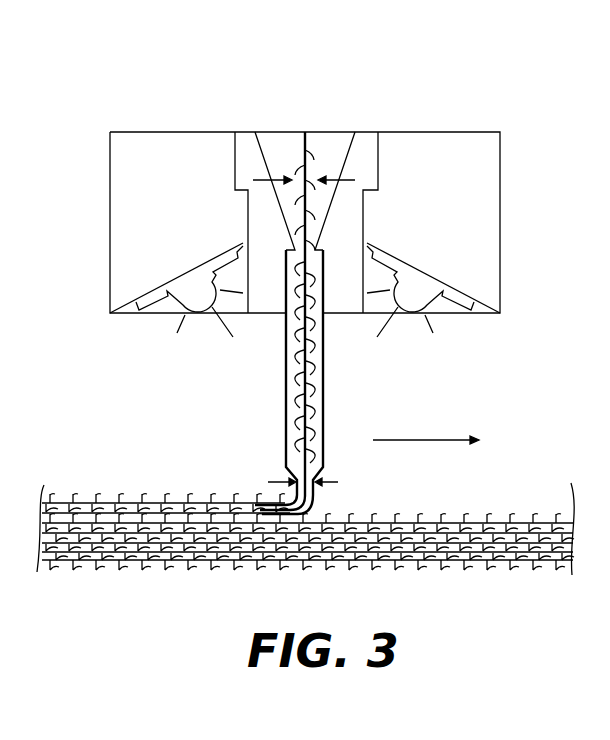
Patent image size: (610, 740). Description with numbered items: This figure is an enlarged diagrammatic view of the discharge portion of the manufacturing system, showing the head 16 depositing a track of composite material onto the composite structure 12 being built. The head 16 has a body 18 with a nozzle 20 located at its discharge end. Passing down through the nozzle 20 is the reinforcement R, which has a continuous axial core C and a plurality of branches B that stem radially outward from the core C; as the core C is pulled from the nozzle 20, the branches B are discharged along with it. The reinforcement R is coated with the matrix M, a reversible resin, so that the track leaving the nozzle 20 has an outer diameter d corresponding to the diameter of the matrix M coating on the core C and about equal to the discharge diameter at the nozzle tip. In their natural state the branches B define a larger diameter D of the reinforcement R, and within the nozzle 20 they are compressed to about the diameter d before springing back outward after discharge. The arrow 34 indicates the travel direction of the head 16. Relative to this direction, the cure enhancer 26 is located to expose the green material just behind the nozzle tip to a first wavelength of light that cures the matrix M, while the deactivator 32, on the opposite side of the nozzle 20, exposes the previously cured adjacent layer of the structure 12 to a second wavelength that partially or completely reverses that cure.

The head 16 is at (519, 78).
The body 18 is at (466, 246).
The nozzle 20 is at (286, 395).
The cure enhancer 26 is at (190, 304).
The deactivator 32 is at (422, 304).
The arrow 34 is at (425, 440).
The composite structure 12 is at (492, 566).
The reinforcement R is at (315, 119).
The matrix M is at (316, 400).
The branches B is at (301, 143).
The axial core C is at (308, 143).
The diameter of the reinforcement D is at (312, 181).
The outer diameter d is at (309, 484).